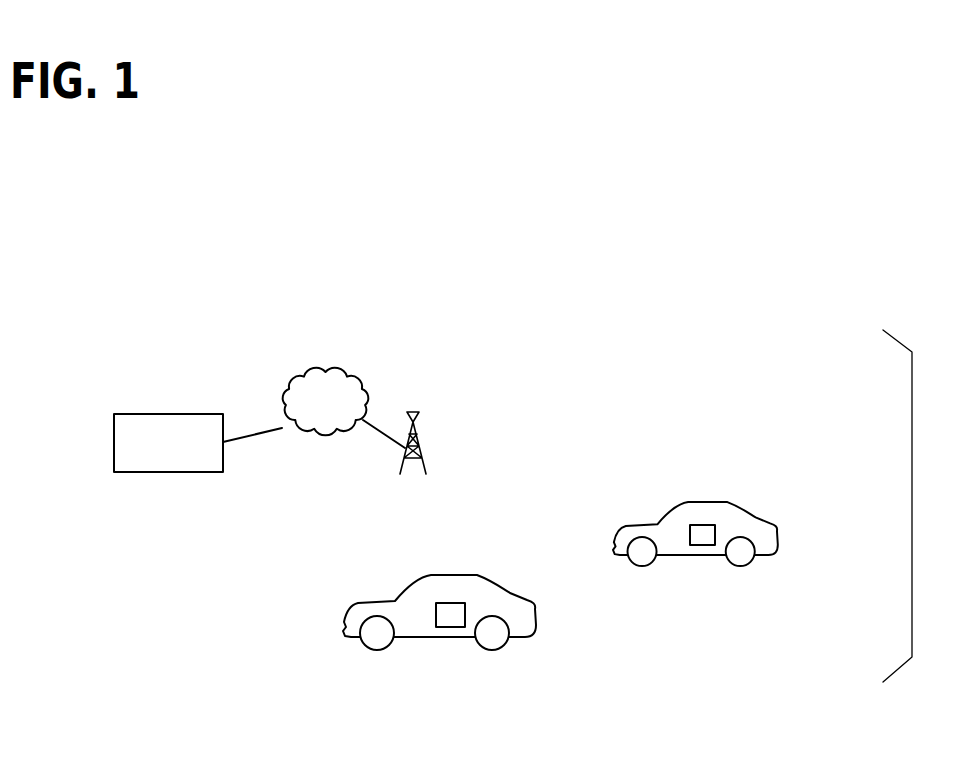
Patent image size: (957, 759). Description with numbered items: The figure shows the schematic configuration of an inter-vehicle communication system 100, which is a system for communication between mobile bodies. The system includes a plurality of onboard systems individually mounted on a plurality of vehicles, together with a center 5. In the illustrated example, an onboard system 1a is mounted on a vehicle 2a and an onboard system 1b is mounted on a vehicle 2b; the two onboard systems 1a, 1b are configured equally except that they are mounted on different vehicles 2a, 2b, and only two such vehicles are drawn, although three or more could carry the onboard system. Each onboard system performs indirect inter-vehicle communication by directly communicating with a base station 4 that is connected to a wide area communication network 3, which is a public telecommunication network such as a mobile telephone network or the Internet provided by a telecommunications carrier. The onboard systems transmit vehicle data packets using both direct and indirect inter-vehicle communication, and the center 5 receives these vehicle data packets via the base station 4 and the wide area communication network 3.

The inter-vehicle communication system 100 is at (650, 409).
The center 5 is at (152, 414).
The wide area communication network 3 is at (347, 365).
The base station 4 is at (420, 440).
The vehicle 2a is at (455, 624).
The vehicle 2b is at (714, 543).
The onboard system 1a is at (452, 627).
The onboard system 1b is at (700, 545).